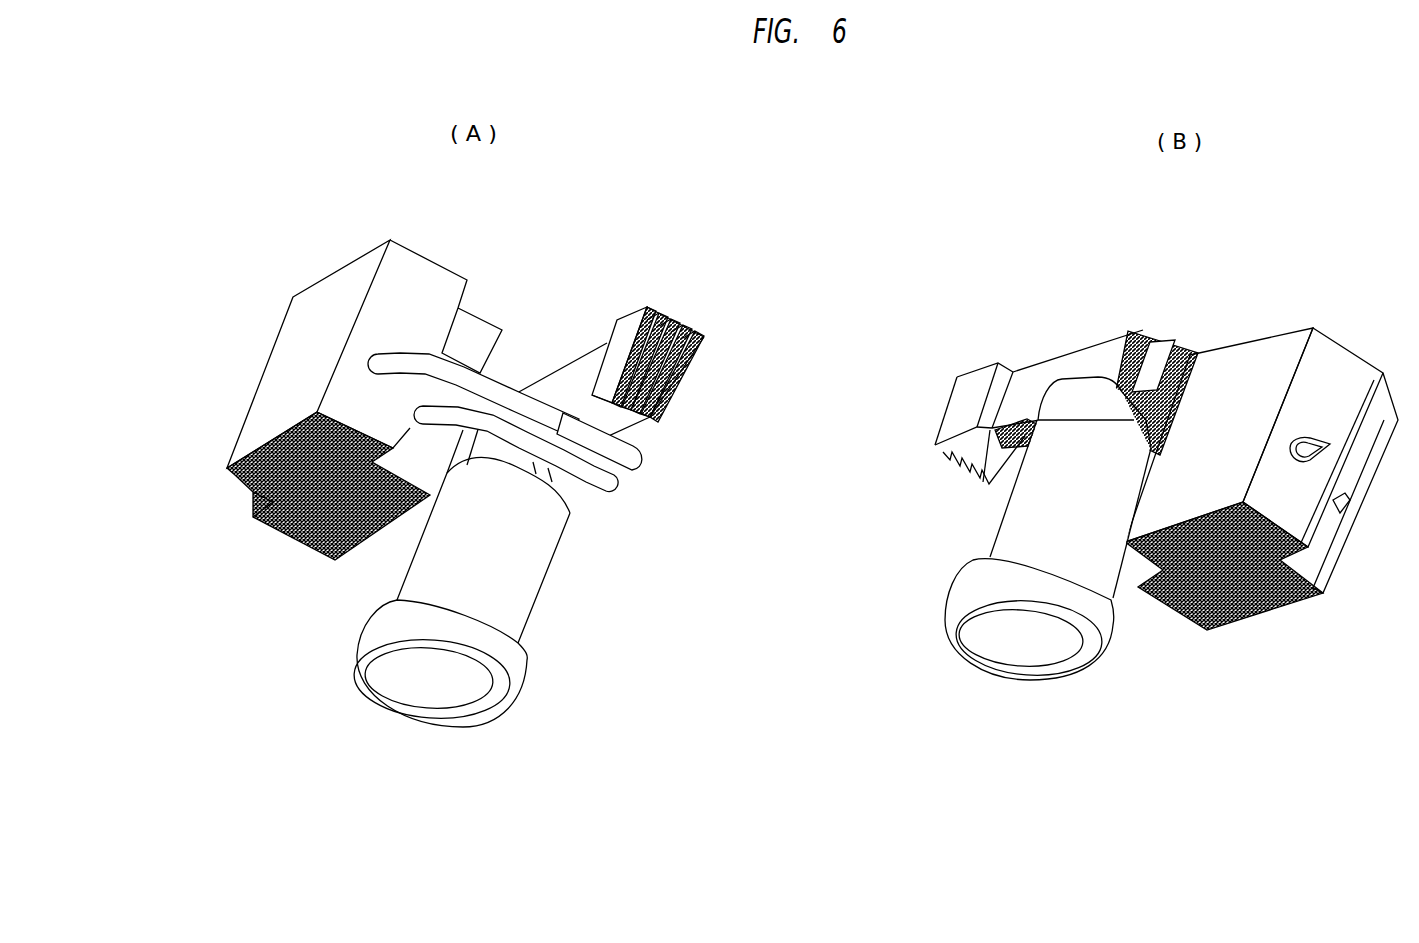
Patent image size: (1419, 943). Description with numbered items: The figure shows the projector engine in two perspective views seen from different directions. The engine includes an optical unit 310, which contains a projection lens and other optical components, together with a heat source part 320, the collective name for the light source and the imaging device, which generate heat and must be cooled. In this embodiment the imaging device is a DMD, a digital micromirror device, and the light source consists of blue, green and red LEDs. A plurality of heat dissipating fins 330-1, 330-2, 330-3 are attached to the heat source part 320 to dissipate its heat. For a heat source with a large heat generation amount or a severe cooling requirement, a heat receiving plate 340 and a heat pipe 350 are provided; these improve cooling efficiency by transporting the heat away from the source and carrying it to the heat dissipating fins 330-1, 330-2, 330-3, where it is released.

The optical unit 310 is at (527, 593).
The heat source part 320 is at (563, 377).
The heat dissipating fin 330-1 is at (1346, 697).
The heat dissipating fin 330-2 is at (690, 327).
The heat dissipating fin 330-3 is at (1198, 352).
The heat receiving plate 340 is at (622, 442).
The heat pipe 350 is at (387, 357).
The digital micromirror device DMD is at (1143, 333).